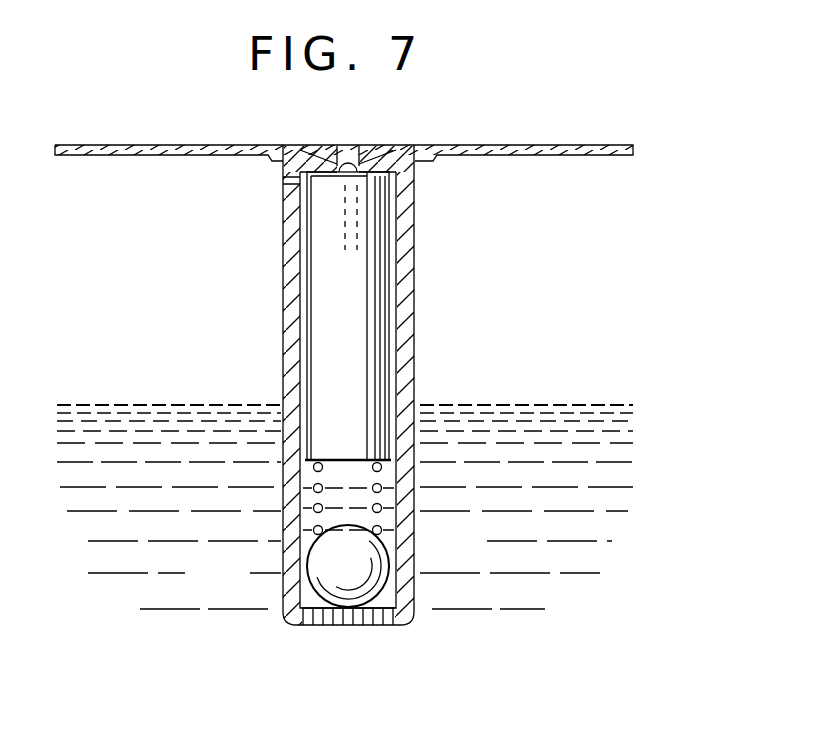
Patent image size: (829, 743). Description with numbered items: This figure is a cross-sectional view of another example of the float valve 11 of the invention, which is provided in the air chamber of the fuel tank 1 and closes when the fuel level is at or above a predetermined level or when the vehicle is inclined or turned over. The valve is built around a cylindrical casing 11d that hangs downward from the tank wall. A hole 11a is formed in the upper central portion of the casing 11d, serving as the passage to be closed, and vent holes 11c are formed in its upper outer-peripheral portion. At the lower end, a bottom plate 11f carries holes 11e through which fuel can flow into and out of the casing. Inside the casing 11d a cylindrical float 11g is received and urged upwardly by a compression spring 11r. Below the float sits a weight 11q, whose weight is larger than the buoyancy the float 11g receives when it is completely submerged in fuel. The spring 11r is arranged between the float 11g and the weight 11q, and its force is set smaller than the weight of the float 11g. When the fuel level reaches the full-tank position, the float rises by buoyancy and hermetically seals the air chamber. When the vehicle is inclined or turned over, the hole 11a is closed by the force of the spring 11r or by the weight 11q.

The fuel tank 1 is at (523, 145).
The float valve 11 is at (267, 220).
The hole 11a is at (348, 172).
The vent holes 11c is at (283, 180).
The casing 11d is at (283, 258).
The float 11g is at (370, 274).
The compression spring 11r is at (381, 490).
The weight 11q is at (320, 564).
The holes 11e is at (333, 628).
The bottom plate 11f is at (370, 628).